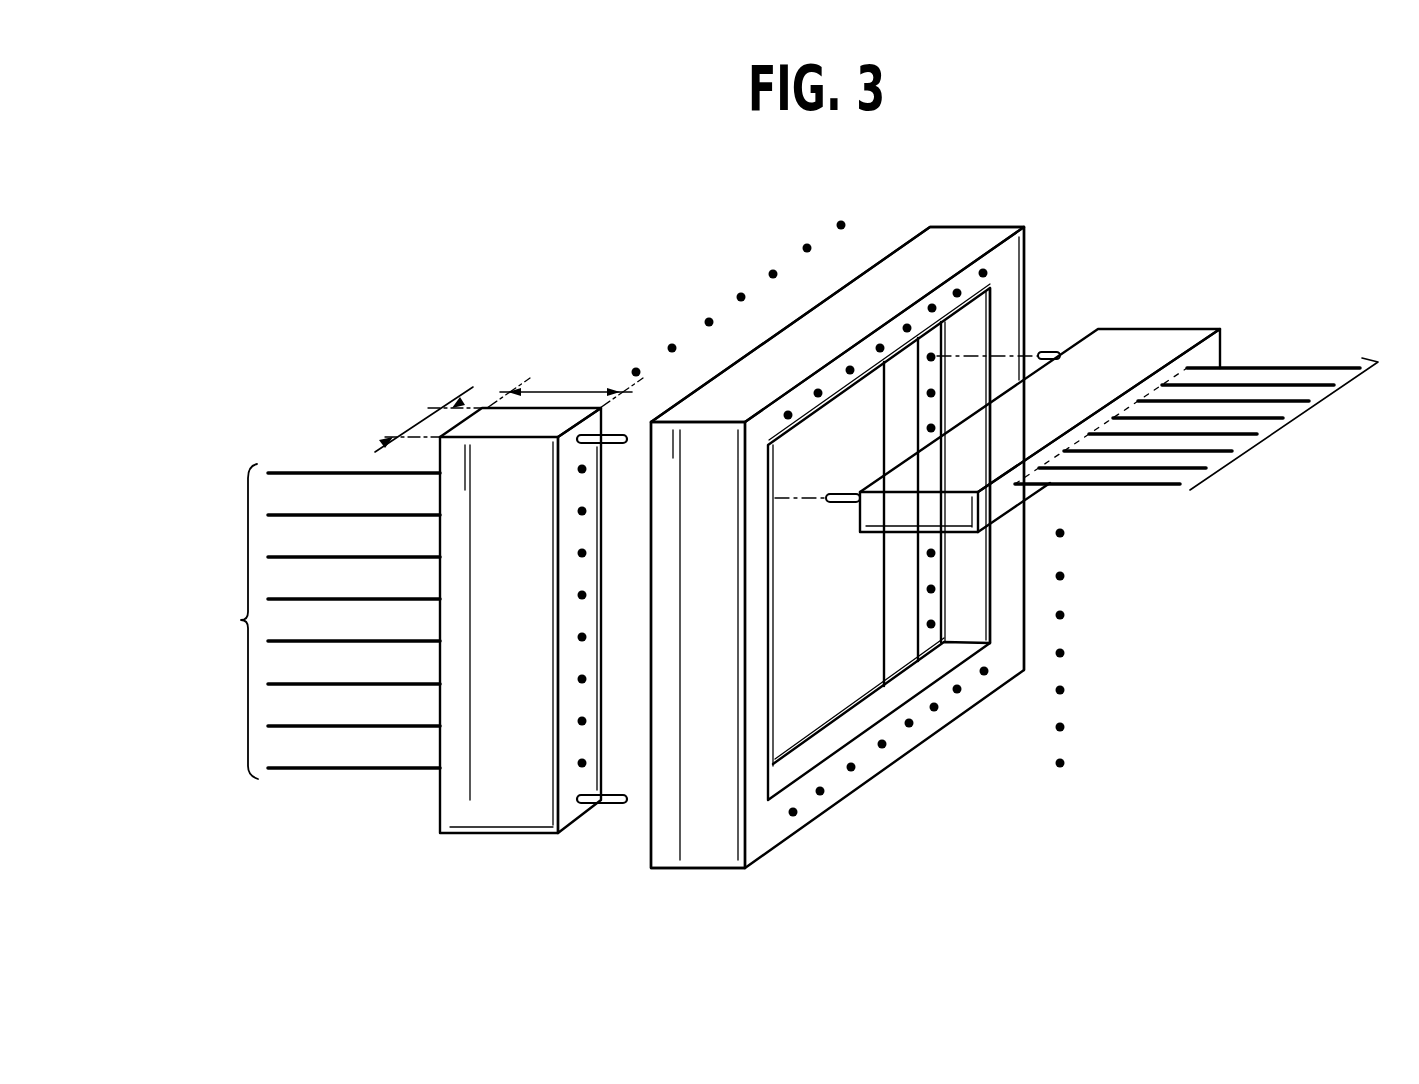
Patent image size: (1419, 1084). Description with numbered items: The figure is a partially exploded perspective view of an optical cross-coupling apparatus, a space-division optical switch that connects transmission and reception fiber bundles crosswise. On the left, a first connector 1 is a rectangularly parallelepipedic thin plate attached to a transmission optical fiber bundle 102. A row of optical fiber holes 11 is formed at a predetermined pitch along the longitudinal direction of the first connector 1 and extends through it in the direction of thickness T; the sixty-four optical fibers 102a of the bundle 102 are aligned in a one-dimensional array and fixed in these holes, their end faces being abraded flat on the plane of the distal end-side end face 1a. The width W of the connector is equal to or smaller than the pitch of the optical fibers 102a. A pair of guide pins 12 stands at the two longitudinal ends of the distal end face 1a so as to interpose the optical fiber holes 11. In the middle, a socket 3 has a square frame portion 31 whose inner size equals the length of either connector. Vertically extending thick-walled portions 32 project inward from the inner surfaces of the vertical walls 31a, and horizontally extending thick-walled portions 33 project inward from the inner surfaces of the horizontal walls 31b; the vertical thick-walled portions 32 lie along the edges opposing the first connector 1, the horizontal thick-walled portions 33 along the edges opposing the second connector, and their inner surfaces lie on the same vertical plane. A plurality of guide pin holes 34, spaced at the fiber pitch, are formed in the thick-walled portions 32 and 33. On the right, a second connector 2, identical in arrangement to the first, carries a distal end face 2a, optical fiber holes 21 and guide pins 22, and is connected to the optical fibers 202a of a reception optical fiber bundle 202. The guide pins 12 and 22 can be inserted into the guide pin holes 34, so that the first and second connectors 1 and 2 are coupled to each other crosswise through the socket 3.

The first connector 1 is at (480, 403).
The distal end-side end face 1a is at (588, 527).
The optical fiber holes 11 is at (577, 686).
The guide pins 12 is at (611, 805).
The optical fiber bundle 102 is at (241, 620).
The optical fibers 102a is at (315, 470).
The width W is at (423, 423).
The direction of thickness T is at (570, 392).
The socket 3 is at (876, 254).
The square frame portion 31 is at (747, 387).
The vertical walls 31a is at (1013, 298).
The horizontal walls 31b is at (803, 733).
The vertical thick-walled portions 32 is at (931, 607).
The horizontal thick-walled portions 33 is at (803, 800).
The guide pin holes 34 is at (956, 760).
The second connector 2 is at (1204, 317).
The distal end face of second connector 2a is at (1086, 342).
The optical fiber holes 21 is at (1047, 486).
The guide pins 22 is at (841, 504).
The optical fiber bundle 202 is at (1290, 426).
The optical fibers 202a is at (1288, 367).